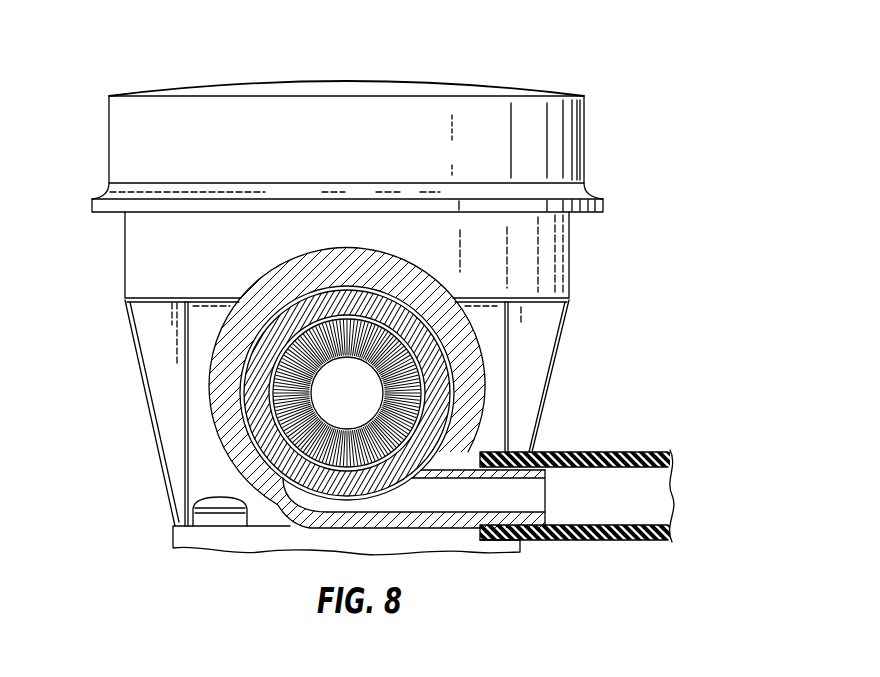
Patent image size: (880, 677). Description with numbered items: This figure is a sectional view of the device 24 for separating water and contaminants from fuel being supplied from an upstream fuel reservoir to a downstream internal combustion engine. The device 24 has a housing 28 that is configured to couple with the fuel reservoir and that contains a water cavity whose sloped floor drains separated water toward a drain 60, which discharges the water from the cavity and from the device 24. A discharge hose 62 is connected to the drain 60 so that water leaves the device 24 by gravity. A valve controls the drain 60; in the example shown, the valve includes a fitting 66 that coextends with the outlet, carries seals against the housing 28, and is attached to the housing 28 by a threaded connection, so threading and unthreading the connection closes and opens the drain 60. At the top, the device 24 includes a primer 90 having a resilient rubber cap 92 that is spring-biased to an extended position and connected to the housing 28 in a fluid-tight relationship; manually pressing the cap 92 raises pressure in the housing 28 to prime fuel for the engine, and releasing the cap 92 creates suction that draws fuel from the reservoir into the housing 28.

The device 24 is at (649, 103).
The housing 28 is at (570, 244).
The drain 60 is at (547, 498).
The discharge hose 62 is at (638, 542).
The fitting 66 is at (433, 418).
The primer 90 is at (450, 78).
The resilient rubber cap 92 is at (219, 83).